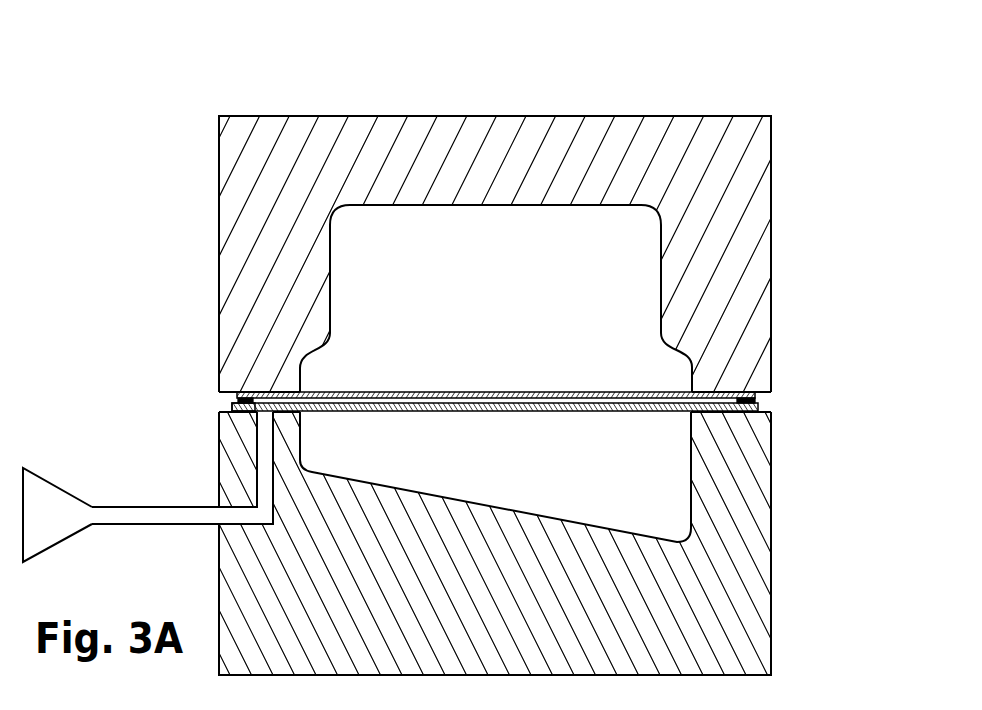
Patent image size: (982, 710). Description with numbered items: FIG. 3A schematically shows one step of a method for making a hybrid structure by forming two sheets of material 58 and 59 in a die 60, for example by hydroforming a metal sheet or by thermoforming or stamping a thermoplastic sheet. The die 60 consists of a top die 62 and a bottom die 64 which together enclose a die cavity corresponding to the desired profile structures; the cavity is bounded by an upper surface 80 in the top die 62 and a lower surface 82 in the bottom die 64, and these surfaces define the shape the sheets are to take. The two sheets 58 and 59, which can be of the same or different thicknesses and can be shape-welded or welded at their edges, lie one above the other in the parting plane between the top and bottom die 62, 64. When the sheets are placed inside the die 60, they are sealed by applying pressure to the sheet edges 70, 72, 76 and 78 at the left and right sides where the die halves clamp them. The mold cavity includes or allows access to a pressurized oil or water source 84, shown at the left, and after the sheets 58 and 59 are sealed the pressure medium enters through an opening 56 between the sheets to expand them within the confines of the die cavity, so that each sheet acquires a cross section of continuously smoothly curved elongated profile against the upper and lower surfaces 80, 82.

The die 60 is at (205, 78).
The top die 62 is at (720, 190).
The bottom die 64 is at (730, 532).
The opening 56 is at (265, 411).
The sheet of material 58 is at (511, 392).
The sheet of material 59 is at (548, 411).
The sheet edge 70 is at (270, 393).
The sheet edge 72 is at (712, 392).
The sheet edge 76 is at (231, 407).
The sheet edge 78 is at (740, 414).
The upper surface of die cavity 80 is at (562, 205).
The lower surface of die cavity 82 is at (560, 515).
The pressurized oil or water source 84 is at (47, 495).